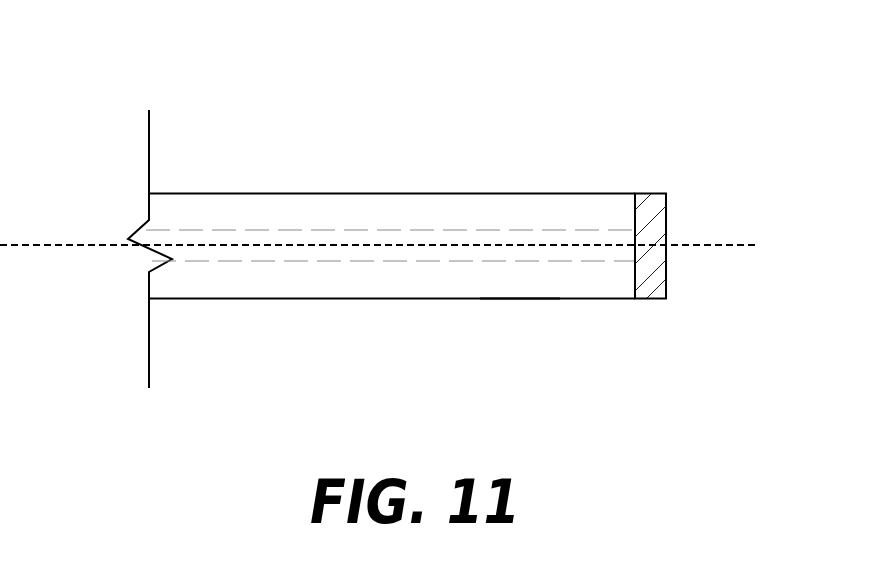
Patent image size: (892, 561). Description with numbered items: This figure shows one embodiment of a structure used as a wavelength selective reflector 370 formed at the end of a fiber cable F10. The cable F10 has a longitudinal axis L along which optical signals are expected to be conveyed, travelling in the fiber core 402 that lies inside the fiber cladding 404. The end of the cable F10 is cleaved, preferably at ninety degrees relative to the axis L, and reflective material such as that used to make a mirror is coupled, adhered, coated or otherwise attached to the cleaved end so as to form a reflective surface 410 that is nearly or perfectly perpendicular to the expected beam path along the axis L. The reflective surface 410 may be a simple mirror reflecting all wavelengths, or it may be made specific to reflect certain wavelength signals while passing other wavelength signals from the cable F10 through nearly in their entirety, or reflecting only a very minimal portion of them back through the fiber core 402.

The wavelength selective reflector 370 is at (486, 67).
The fiber core 402 is at (353, 228).
The fiber cladding 404 is at (272, 212).
The reflective surface 410 is at (656, 195).
The fiber cable F10 is at (490, 300).
The longitudinal axis L is at (377, 229).